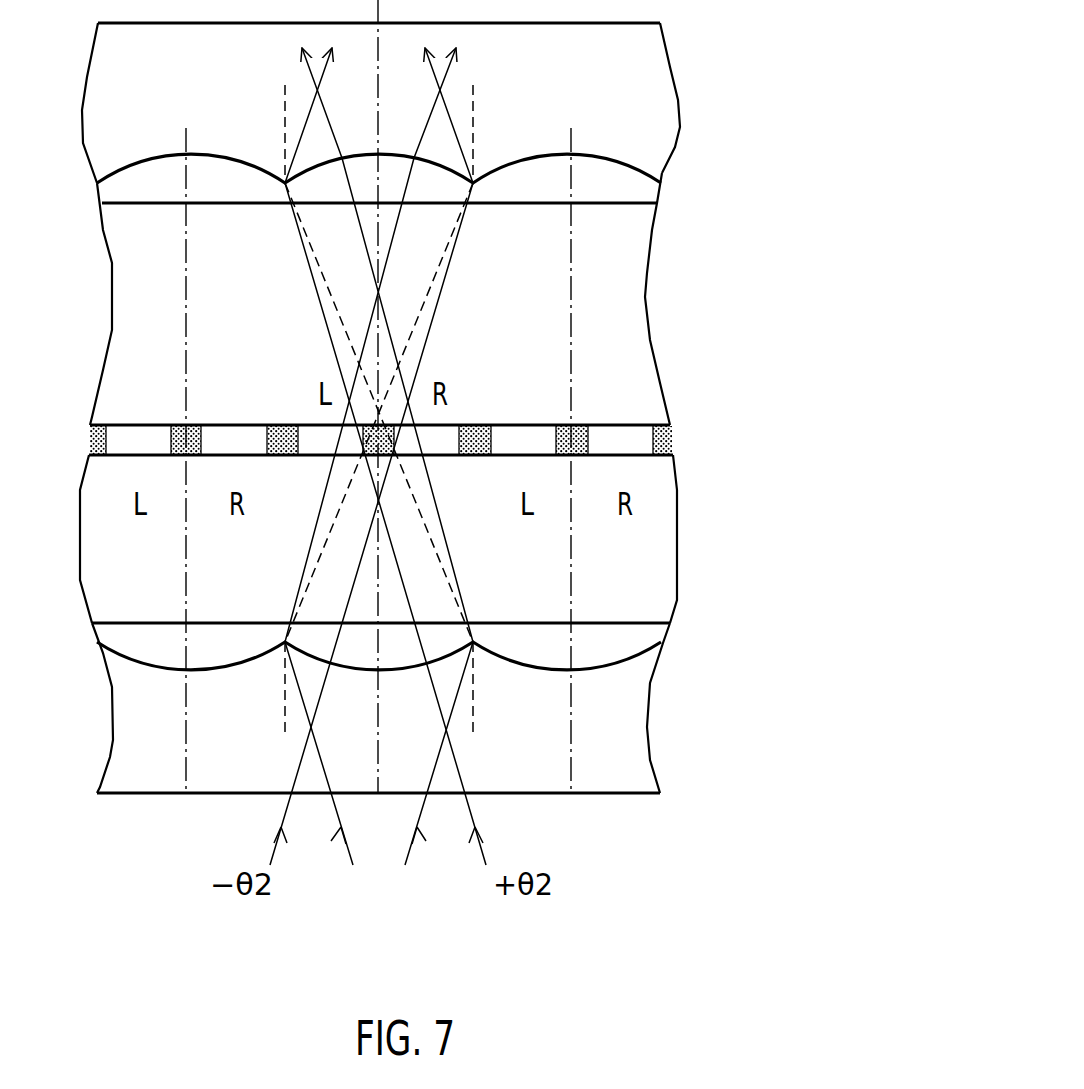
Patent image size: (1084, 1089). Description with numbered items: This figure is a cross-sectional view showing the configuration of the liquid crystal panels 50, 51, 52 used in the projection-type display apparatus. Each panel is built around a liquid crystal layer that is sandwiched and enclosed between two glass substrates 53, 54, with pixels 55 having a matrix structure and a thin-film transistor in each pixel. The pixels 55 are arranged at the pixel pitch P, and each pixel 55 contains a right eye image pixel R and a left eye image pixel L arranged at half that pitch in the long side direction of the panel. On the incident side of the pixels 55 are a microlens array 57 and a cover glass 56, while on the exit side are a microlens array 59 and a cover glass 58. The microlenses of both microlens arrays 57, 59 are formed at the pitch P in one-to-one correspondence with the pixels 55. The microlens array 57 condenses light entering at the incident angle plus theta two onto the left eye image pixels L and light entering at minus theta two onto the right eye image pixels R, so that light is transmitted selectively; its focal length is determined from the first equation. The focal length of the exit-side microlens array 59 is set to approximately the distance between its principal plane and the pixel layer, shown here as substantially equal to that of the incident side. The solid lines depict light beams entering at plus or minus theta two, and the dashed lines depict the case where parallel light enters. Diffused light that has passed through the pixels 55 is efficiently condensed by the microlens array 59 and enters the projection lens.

The liquid crystal panel 50 is at (501, 408).
The liquid crystal panel 51 is at (762, 793).
The liquid crystal panel 52 is at (762, 793).
The glass substrate 53 is at (645, 535).
The glass substrate 54 is at (633, 311).
The pixel 55 is at (625, 433).
The cover glass 56 is at (416, 708).
The microlens array 57 is at (637, 638).
The cover glass 58 is at (660, 94).
The microlens array 59 is at (628, 176).